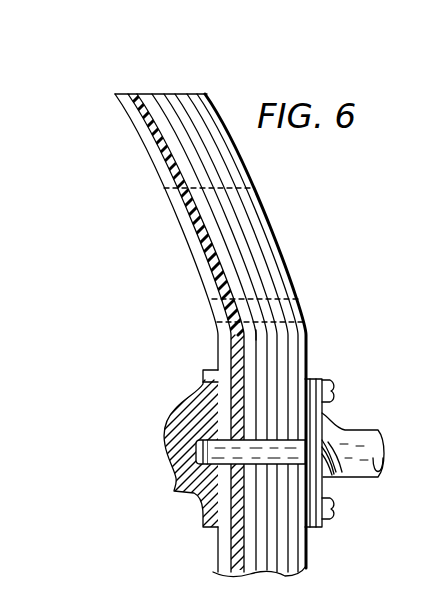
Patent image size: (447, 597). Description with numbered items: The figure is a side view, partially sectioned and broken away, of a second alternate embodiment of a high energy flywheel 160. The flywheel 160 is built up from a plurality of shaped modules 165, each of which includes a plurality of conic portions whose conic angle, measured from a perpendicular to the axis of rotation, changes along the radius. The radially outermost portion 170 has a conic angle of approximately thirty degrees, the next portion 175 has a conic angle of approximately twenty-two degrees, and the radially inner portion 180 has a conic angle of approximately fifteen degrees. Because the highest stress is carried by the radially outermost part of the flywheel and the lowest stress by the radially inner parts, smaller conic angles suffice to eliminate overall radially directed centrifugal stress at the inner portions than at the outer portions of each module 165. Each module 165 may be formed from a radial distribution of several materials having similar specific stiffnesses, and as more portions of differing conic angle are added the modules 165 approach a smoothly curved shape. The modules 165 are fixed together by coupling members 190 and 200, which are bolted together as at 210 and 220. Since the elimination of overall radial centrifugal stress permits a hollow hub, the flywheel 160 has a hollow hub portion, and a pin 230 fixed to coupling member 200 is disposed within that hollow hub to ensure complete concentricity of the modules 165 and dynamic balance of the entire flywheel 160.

The high energy flywheel 160 is at (156, 70).
The shaped modules 165 is at (168, 93).
The conic portion 170 is at (150, 125).
The conic portion 175 is at (193, 213).
The conic portion 180 is at (233, 315).
The coupling member 190 is at (172, 470).
The coupling member 200 is at (325, 490).
The bolt 210 is at (333, 390).
The bolt 220 is at (332, 517).
The pin 230 is at (203, 445).